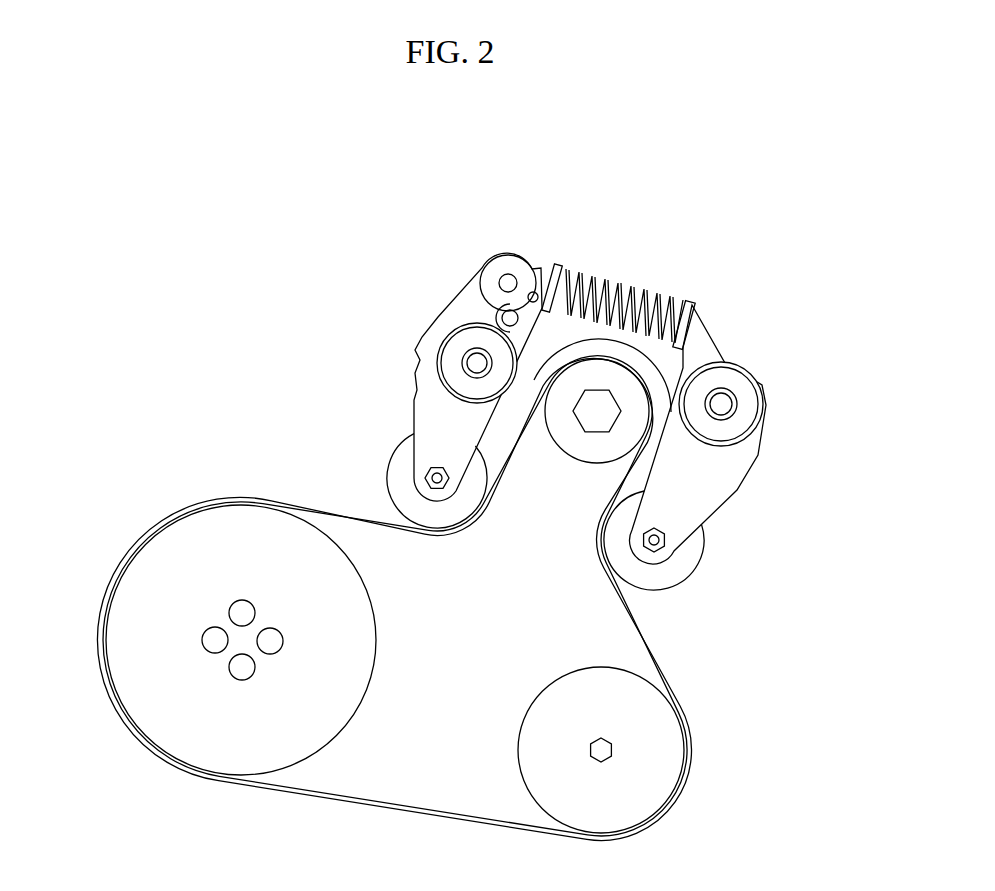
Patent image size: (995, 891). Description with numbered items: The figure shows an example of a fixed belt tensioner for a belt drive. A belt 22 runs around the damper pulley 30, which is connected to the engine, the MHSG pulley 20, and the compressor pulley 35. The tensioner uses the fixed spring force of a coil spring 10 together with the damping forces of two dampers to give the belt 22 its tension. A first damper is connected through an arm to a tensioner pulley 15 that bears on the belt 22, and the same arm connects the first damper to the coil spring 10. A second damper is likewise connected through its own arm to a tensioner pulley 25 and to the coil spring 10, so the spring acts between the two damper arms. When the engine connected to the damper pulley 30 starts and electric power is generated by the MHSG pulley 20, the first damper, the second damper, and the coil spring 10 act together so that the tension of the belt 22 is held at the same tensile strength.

The coil spring 10 is at (657, 294).
The tensioner pulley 15 is at (386, 478).
The MHSG pulley 20 is at (568, 456).
The belt 22 is at (648, 632).
The tensioner pulley 25 is at (706, 538).
The damper pulley 30 is at (378, 640).
The compressor pulley 35 is at (518, 750).